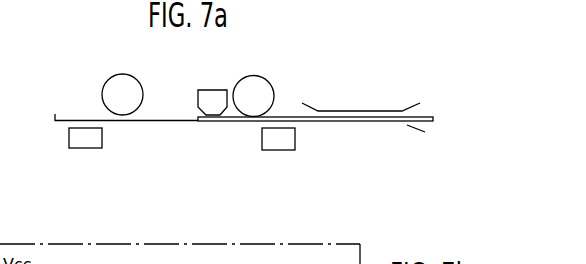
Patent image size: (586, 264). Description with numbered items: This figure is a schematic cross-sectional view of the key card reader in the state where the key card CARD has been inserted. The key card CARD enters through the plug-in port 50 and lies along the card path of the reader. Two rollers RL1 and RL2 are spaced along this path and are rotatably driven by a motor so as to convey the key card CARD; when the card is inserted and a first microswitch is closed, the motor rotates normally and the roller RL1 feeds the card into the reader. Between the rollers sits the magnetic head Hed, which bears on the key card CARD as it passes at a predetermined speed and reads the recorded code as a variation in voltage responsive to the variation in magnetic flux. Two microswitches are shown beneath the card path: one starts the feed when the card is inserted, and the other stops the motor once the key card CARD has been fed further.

The roller RL2 is at (126, 60).
The roller RL1 is at (255, 82).
The magnetic head Hed is at (215, 75).
The plug-in port 50 is at (423, 107).
The key card CARD is at (433, 120).